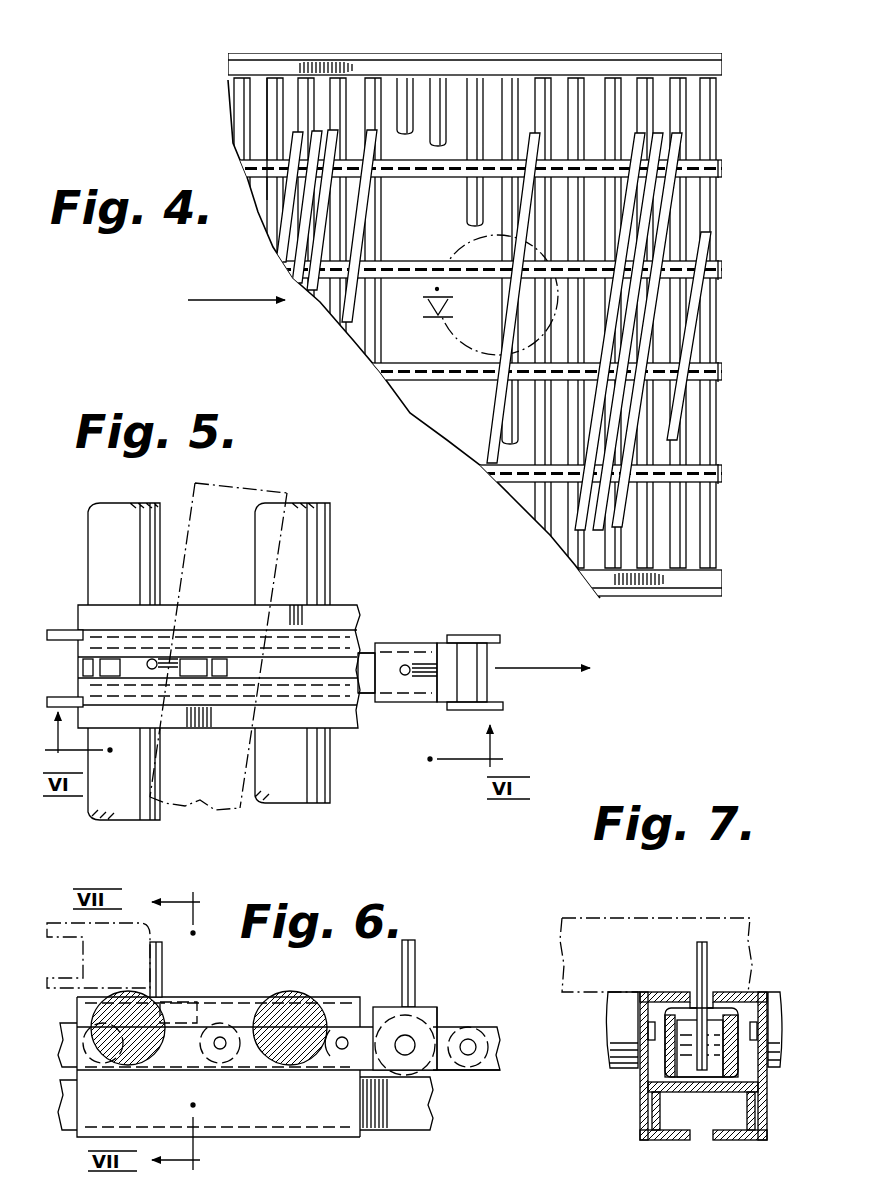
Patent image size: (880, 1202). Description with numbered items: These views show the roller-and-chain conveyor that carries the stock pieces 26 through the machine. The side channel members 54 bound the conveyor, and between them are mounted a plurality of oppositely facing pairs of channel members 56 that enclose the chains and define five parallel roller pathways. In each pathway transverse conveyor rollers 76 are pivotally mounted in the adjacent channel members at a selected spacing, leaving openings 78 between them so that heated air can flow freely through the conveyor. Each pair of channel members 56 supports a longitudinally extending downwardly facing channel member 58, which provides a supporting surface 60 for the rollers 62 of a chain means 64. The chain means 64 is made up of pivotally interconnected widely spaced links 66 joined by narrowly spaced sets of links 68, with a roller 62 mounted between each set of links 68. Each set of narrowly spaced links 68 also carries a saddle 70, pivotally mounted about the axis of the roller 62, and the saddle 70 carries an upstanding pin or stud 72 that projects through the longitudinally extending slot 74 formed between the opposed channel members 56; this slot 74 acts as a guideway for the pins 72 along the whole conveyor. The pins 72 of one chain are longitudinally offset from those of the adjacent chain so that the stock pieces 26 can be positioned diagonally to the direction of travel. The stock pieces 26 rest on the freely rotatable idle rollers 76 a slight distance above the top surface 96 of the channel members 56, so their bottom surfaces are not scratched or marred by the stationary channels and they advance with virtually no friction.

In FIG. 4, the stock pieces 26 is at (280, 255).
In FIG. 5, the stock pieces 26 is at (240, 478).
In FIG. 6, the stock pieces 26 is at (140, 915).
In FIG. 7, the stock pieces 26 is at (588, 915).
In FIG. 4, the channel members 54 is at (388, 68).
In FIG. 4, the channel members 56 is at (380, 363).
In FIG. 5, the channel members 56 is at (205, 603).
In FIG. 6, the channel members 56 is at (213, 1117).
In FIG. 7, the channel members 56 is at (640, 1112).
In FIG. 6, the downwardly facing channel member 58 is at (378, 1130).
In FIG. 7, the downwardly facing channel member 58 is at (665, 1094).
In FIG. 7, the supporting surface 60 is at (650, 1086).
In FIG. 6, the rollers 62 is at (183, 1082).
In FIG. 7, the rollers 62 is at (693, 1082).
In FIG. 4, the chain means 64 is at (727, 168).
In FIG. 5, the chain means 64 is at (509, 641).
In FIG. 6, the chain means 64 is at (455, 1015).
In FIG. 5, the widely spaced links 66 is at (60, 630).
In FIG. 6, the widely spaced links 66 is at (487, 1055).
In FIG. 5, the narrowly spaced sets of links 68 is at (368, 695).
In FIG. 6, the narrowly spaced sets of links 68 is at (443, 1062).
In FIG. 7, the narrowly spaced sets of links 68 is at (668, 1022).
In FIG. 5, the saddle 70 is at (387, 643).
In FIG. 6, the saddle 70 is at (387, 1007).
In FIG. 7, the saddle 70 is at (668, 1012).
In FIG. 5, the pin or stud 72 is at (405, 665).
In FIG. 6, the pin or stud 72 is at (162, 958).
In FIG. 7, the pin or stud 72 is at (702, 940).
In FIG. 4, the slot 74 is at (437, 176).
In FIG. 7, the slot 74 is at (697, 995).
In FIG. 4, the conveyor rollers 76 is at (277, 132).
In FIG. 5, the conveyor rollers 76 is at (108, 520).
In FIG. 6, the conveyor rollers 76 is at (123, 1063).
In FIG. 7, the conveyor rollers 76 is at (618, 995).
In FIG. 4, the openings 78 is at (292, 100).
In FIG. 7, the top surface 96 is at (748, 990).